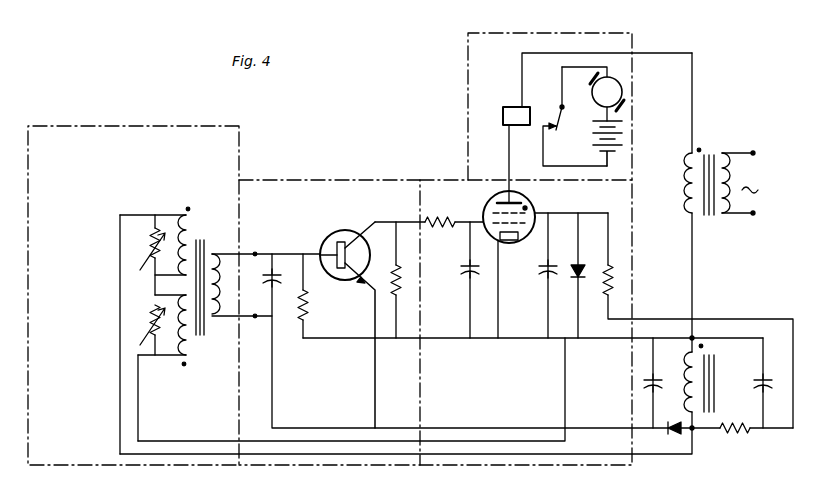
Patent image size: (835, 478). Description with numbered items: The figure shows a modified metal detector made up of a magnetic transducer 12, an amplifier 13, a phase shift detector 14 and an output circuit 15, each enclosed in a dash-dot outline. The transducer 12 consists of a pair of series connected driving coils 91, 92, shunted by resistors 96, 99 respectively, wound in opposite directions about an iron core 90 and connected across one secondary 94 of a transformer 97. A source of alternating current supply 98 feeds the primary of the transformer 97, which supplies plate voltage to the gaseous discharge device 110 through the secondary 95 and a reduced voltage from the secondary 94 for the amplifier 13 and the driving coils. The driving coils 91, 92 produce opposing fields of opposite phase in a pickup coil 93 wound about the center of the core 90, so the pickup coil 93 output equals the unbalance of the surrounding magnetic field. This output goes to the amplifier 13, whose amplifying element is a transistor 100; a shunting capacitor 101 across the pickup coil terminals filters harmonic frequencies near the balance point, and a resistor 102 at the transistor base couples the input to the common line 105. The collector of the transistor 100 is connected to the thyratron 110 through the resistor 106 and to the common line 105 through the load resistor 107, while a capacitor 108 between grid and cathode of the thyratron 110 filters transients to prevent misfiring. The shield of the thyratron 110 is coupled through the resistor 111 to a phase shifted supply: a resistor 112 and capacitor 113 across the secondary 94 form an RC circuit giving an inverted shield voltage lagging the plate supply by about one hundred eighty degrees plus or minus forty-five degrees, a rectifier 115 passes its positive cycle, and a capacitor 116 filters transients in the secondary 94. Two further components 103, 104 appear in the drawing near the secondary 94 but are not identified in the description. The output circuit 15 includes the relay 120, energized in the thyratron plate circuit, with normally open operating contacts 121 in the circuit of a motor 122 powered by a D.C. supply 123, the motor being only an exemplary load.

The magnetic transducer 12 is at (241, 131).
The amplifier 13 is at (358, 184).
The phase shift detector 14 is at (449, 181).
The output circuit 15 is at (634, 43).
The core 90 is at (220, 289).
The driving coil 91 is at (191, 222).
The driving coil 92 is at (188, 357).
The pickup coil 93 is at (214, 317).
The secondary 94 is at (718, 380).
The secondary 95 is at (698, 203).
The resistor 96 is at (150, 238).
The transformer 97 is at (729, 202).
The source of alternating current supply 98 is at (762, 186).
The resistor 99 is at (150, 306).
The transistor 100 is at (328, 244).
The shunting capacitor 101 is at (268, 284).
The resistor 102 is at (304, 320).
The rectifier diode 103 is at (682, 426).
The capacitor 104 is at (673, 381).
The common line 105 is at (475, 341).
The resistor 106 is at (451, 222).
The load resistor 107 is at (402, 274).
The capacitor 108 is at (470, 282).
The gaseous discharge device 110 is at (518, 208).
The resistor 111 is at (605, 295).
The resistor 112 is at (745, 436).
The capacitor 113 is at (763, 391).
The rectifier 115 is at (583, 271).
The capacitor 116 is at (542, 276).
The relay 120 is at (504, 107).
The operating contacts 121 is at (561, 126).
The motor 122 is at (627, 88).
The D.C. supply 123 is at (595, 150).